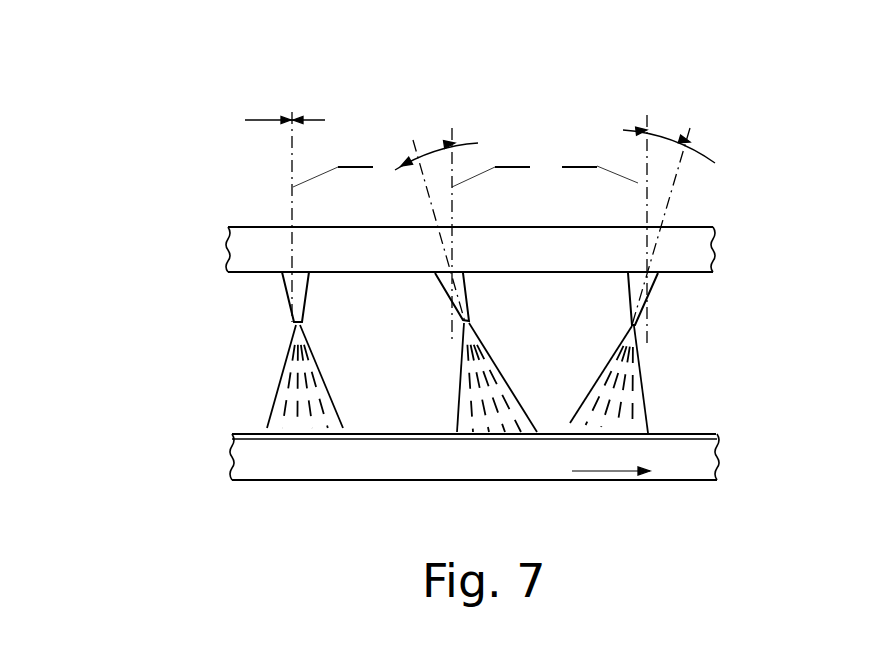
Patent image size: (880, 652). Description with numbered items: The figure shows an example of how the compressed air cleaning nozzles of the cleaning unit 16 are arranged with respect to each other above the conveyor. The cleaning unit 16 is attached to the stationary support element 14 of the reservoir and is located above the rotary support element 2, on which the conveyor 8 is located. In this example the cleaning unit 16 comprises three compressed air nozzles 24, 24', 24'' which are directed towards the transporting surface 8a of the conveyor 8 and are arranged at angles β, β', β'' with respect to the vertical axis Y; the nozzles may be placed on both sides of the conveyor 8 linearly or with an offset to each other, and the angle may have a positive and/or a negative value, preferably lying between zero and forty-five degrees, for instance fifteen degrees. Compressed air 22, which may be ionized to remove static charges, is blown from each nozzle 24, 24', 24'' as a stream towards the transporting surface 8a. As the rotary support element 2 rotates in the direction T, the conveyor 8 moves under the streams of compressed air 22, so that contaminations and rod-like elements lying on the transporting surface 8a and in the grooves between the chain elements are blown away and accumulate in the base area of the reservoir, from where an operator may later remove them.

The rotary support element 2 is at (245, 455).
The conveyor 8 is at (700, 437).
The transporting surface 8a is at (688, 420).
The stationary support element 14 is at (705, 248).
The cleaning unit 16 is at (128, 163).
The compressed air 22 is at (622, 365).
The compressed air nozzle 24 is at (205, 217).
The compressed air nozzle 24' is at (409, 234).
The compressed air nozzle 24'' is at (730, 229).